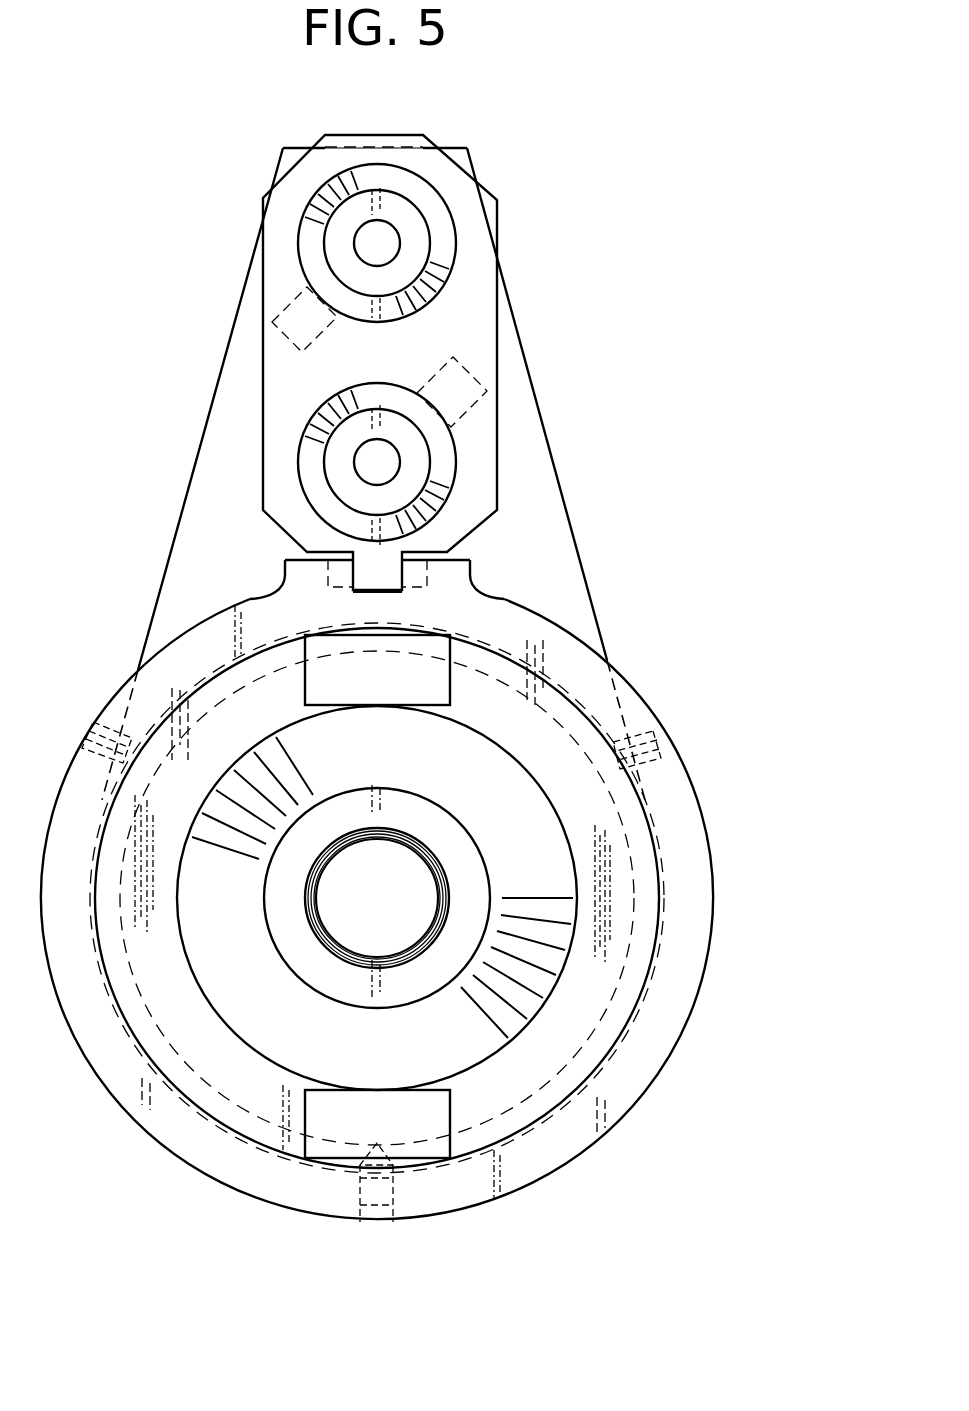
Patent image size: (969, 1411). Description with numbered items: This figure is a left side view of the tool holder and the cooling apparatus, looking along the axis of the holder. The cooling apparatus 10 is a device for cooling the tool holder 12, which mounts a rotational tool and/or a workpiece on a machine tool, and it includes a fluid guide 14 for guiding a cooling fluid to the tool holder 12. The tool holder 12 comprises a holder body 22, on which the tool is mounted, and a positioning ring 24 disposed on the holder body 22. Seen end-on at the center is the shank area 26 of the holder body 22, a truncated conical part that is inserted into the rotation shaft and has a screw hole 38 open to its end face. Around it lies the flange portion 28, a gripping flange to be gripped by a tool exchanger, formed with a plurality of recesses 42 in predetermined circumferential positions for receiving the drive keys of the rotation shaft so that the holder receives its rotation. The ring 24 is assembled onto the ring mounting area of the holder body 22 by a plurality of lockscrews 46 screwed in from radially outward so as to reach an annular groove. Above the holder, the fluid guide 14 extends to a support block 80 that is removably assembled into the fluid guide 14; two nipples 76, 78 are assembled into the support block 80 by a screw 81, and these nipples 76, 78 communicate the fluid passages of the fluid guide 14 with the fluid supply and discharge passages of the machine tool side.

The cooling apparatus 10 is at (641, 169).
The tool holder 12 is at (668, 890).
The fluid guide 14 is at (578, 533).
The holder body 22 is at (570, 692).
The positioning ring 24 is at (712, 822).
The shank area 26 is at (433, 970).
The flange portion 28 is at (615, 1012).
The screw hole 38 is at (350, 934).
The recesses 42 is at (308, 656).
The lockscrews 46 is at (647, 727).
The nipple 76 is at (427, 202).
The nipple 78 is at (453, 462).
The support block 80 is at (391, 142).
The screw 81 is at (262, 290).